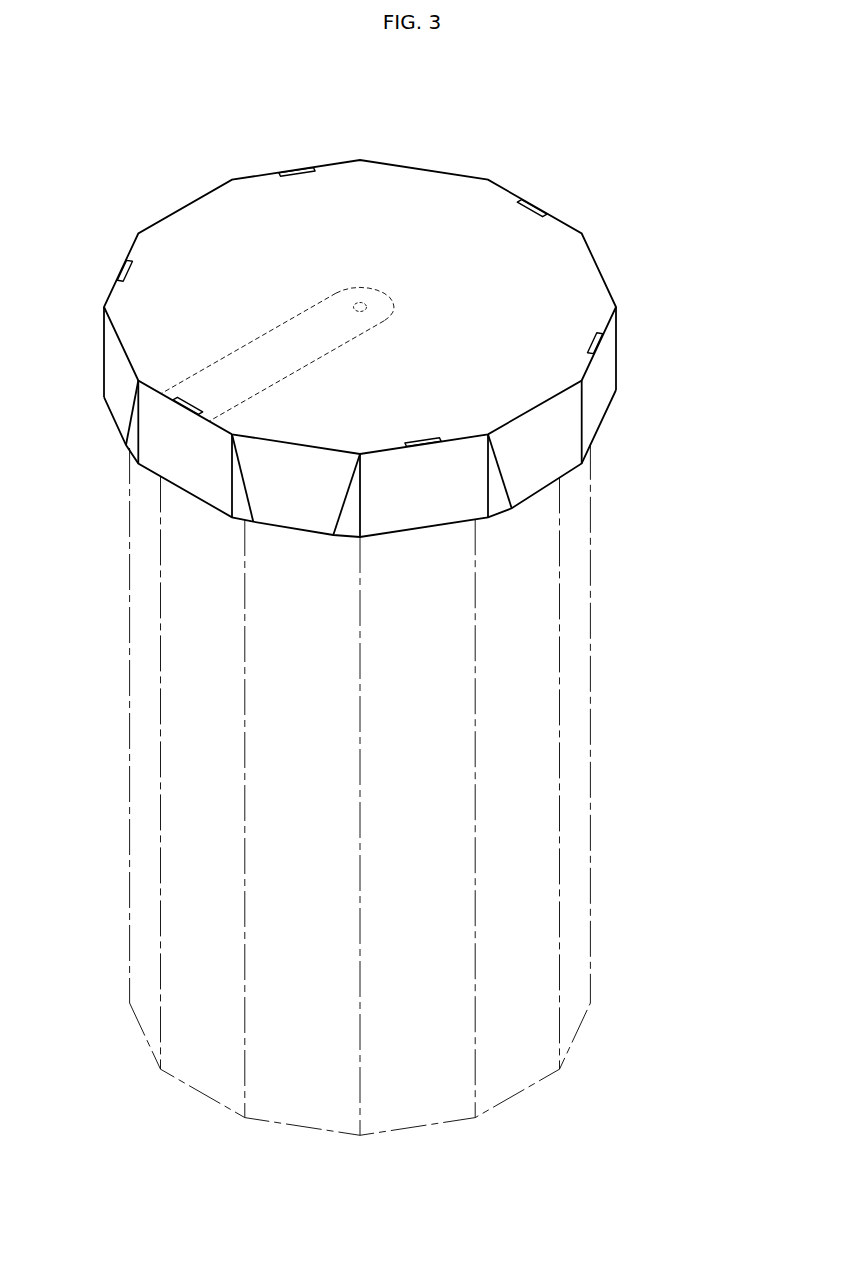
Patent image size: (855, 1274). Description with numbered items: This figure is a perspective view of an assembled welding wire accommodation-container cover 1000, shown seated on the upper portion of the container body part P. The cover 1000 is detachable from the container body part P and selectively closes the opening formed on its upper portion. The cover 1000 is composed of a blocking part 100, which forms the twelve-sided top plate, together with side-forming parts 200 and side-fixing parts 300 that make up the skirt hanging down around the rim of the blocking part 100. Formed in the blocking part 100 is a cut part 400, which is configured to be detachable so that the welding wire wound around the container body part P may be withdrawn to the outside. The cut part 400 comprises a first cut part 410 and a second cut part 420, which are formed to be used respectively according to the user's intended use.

The welding wire accommodation-container cover 1000 is at (410, 304).
The blocking part 100 is at (405, 307).
The side-forming parts 200 is at (424, 422).
The side-fixing parts 300 is at (412, 458).
The cut part 400 is at (256, 246).
The first cut part 410 is at (360, 302).
The second cut part 420 is at (321, 302).
The container body part P is at (590, 687).